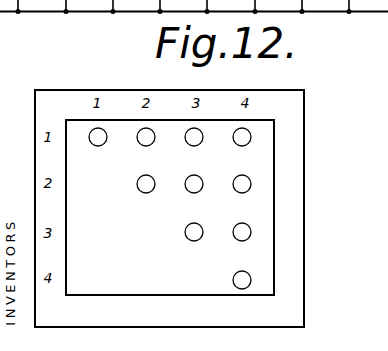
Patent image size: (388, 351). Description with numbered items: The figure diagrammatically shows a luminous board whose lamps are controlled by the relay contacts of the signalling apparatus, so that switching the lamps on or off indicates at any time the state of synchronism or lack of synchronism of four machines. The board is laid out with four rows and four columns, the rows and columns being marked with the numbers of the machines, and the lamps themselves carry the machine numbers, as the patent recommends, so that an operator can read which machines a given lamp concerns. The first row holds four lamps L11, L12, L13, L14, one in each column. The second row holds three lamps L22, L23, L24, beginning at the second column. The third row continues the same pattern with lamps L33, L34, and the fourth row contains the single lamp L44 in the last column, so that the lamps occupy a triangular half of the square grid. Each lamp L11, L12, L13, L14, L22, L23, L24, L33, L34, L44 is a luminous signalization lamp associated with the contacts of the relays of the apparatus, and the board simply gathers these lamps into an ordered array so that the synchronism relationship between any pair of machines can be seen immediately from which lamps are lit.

The luminous signalization lamp L11 is at (96, 146).
The luminous signalization lamp L12 is at (144, 146).
The luminous signalization lamp L13 is at (192, 146).
The luminous signalization lamp L14 is at (240, 146).
The luminous signalization lamp L22 is at (144, 193).
The luminous signalization lamp L23 is at (192, 193).
The luminous signalization lamp L24 is at (240, 193).
The luminous signalization lamp L33 is at (192, 241).
The luminous signalization lamp L34 is at (240, 241).
The luminous signalization lamp L44 is at (231, 282).